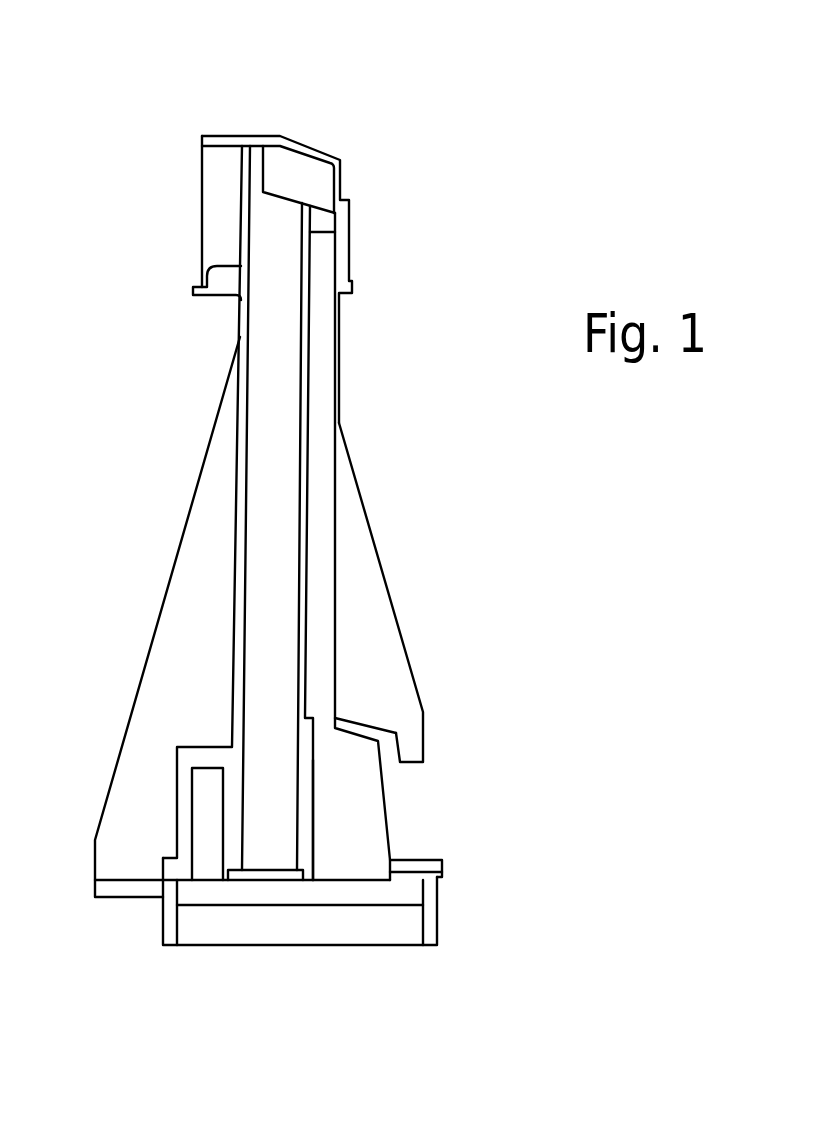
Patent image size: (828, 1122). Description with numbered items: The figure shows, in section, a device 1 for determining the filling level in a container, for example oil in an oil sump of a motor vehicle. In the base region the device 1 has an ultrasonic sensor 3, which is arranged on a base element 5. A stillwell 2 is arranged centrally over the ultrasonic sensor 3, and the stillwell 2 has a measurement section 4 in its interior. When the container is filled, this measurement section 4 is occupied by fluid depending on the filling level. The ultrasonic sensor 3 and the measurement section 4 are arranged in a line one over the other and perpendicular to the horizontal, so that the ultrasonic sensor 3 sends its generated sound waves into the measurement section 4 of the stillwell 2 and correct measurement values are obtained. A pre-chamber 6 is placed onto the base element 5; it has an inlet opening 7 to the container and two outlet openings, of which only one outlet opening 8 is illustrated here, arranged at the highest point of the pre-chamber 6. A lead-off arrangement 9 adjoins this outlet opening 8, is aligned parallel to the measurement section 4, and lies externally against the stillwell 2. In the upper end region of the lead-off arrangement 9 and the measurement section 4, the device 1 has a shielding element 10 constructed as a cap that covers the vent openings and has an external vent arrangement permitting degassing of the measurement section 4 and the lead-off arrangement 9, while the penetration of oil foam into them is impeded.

The device 1 is at (148, 543).
The stillwell 2 is at (240, 432).
The ultrasonic sensor 3 is at (262, 875).
The measurement section 4 is at (275, 304).
The base element 5 is at (233, 935).
The pre-chamber 6 is at (354, 795).
The inlet opening 7 is at (415, 853).
The outlet opening 8 is at (323, 725).
The lead-off arrangement 9 is at (320, 406).
The shielding element 10 is at (263, 140).